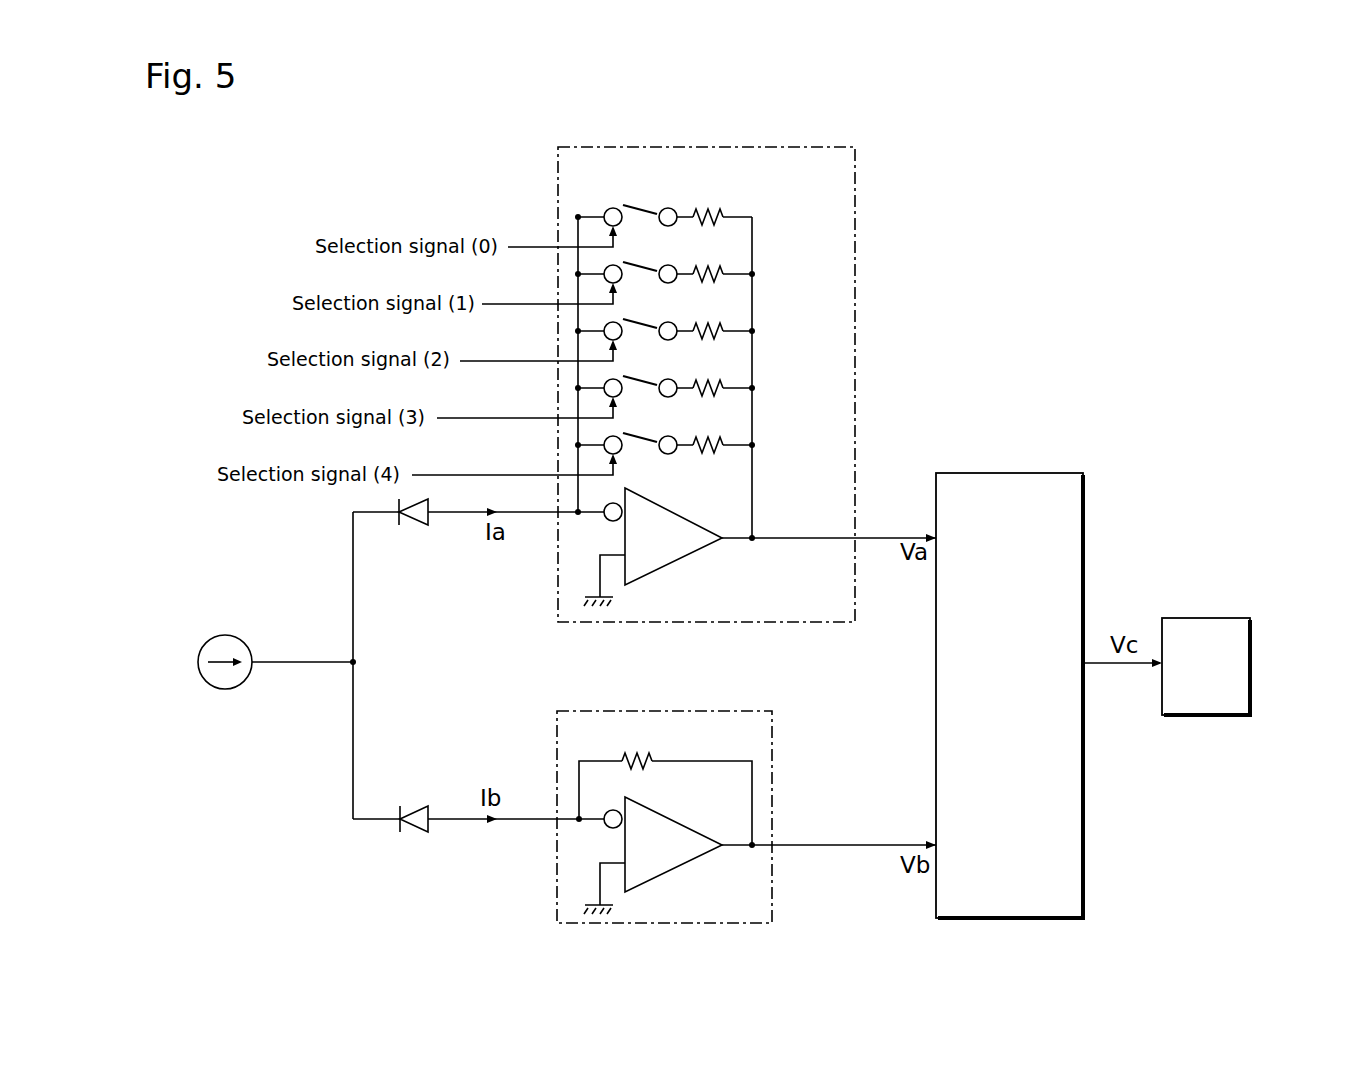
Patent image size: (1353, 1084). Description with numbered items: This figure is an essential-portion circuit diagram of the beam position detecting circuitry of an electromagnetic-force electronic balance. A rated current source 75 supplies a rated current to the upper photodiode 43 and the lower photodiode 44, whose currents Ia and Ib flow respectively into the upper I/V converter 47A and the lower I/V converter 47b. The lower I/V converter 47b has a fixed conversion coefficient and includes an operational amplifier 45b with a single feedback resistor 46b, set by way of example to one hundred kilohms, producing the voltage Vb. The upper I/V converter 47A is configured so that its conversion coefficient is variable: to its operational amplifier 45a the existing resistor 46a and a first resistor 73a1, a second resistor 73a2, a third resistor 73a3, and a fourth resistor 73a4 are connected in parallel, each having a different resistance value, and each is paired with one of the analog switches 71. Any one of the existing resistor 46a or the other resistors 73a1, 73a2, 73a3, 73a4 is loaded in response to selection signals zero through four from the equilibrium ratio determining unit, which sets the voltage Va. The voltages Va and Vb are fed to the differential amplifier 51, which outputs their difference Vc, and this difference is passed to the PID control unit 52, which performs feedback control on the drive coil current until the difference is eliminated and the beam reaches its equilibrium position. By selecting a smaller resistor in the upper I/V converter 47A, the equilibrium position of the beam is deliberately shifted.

The analog switch 71 is at (656, 199).
The existing resistor 46a is at (712, 207).
The first resistor 73a1 is at (720, 271).
The second resistor 73a2 is at (720, 328).
The third resistor 73a3 is at (720, 385).
The fourth resistor 73a4 is at (720, 442).
The upper I/V converter 47A is at (855, 205).
The lower I/V converter 47b is at (772, 750).
The operational amplifier 45a is at (668, 556).
The operational amplifier 45b is at (670, 858).
The resistor 46b is at (645, 753).
The upper photodiode 43 is at (410, 527).
The lower photodiode 44 is at (423, 807).
The rated current source 75 is at (222, 635).
The differential amplifier 51 is at (1016, 472).
The PID control unit 52 is at (1210, 617).